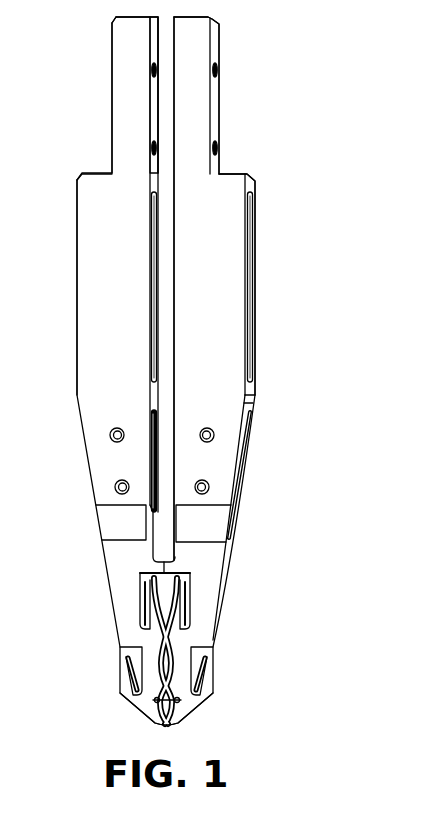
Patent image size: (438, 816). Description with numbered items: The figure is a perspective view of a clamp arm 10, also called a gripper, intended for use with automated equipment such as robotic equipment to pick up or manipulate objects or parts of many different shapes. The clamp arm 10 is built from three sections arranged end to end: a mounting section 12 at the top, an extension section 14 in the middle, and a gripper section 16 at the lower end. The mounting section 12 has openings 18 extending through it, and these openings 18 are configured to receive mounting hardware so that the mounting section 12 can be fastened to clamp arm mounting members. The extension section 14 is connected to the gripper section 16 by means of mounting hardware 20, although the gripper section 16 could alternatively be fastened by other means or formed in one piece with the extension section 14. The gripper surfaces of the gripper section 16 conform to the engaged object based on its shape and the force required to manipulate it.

The clamp arm 10 is at (330, 121).
The mounting section 12 is at (226, 88).
The extension section 14 is at (256, 313).
The gripper section 16 is at (228, 589).
The openings 18 is at (154, 150).
The mounting hardware 20 is at (209, 487).